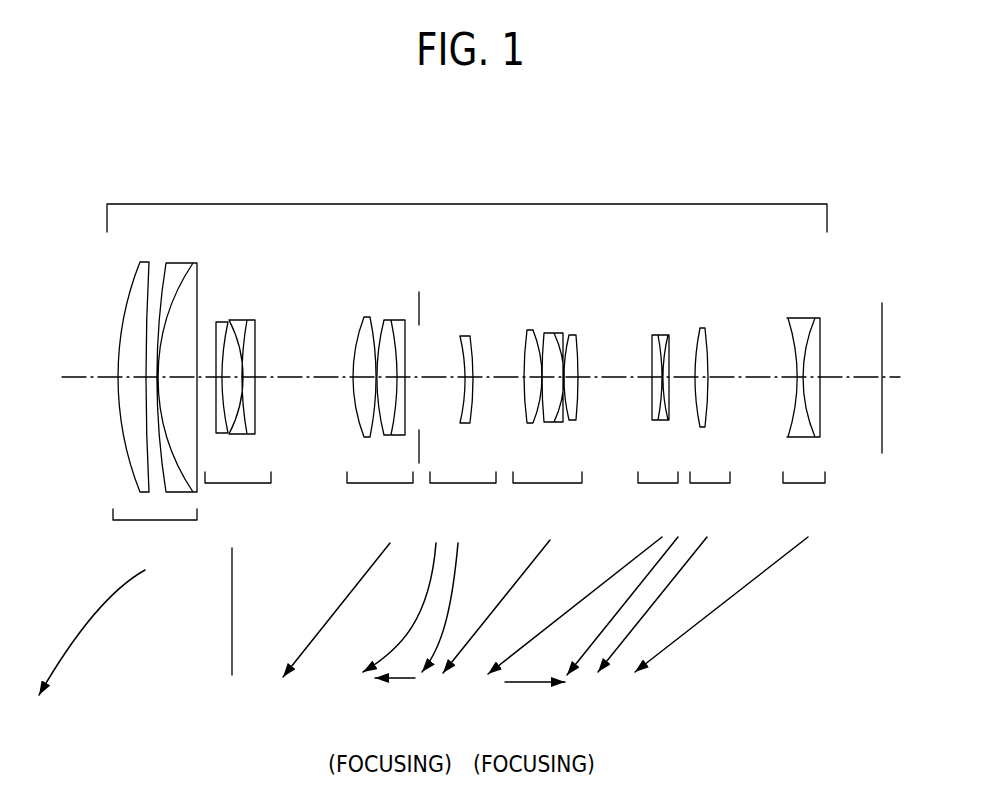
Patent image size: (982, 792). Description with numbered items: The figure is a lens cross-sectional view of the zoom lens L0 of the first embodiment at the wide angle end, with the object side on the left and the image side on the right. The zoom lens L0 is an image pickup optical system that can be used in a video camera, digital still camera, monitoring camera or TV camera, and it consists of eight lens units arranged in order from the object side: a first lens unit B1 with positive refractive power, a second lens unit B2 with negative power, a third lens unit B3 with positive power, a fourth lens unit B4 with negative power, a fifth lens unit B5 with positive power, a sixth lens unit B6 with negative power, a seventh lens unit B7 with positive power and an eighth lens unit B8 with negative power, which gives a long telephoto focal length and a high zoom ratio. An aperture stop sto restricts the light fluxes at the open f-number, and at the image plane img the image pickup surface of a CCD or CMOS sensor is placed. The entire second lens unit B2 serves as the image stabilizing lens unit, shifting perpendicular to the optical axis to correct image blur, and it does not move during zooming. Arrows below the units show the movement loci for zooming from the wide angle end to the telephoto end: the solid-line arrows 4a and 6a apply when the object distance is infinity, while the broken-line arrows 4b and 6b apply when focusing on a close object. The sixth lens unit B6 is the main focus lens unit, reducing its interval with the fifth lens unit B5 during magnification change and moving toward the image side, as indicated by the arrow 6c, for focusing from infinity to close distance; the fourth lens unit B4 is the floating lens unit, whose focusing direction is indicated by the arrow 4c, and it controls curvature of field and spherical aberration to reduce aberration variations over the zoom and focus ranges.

The zoom lens L0 is at (467, 205).
The first lens unit B1 is at (118, 478).
The second lens unit B2 is at (238, 497).
The third lens unit B3 is at (348, 497).
The fourth lens unit B4 is at (463, 425).
The fifth lens unit B5 is at (512, 501).
The sixth lens unit B6 is at (660, 425).
The seventh lens unit B7 is at (670, 500).
The eighth lens unit B8 is at (731, 495).
The aperture stop sto is at (419, 307).
The image plane img is at (882, 309).
The solid-line arrow 4a is at (453, 583).
The broken-line arrow 4b is at (410, 627).
The arrow 4c is at (395, 680).
The solid-line arrow 6a is at (598, 588).
The broken-line arrow 6b is at (591, 648).
The arrow 6c is at (528, 683).